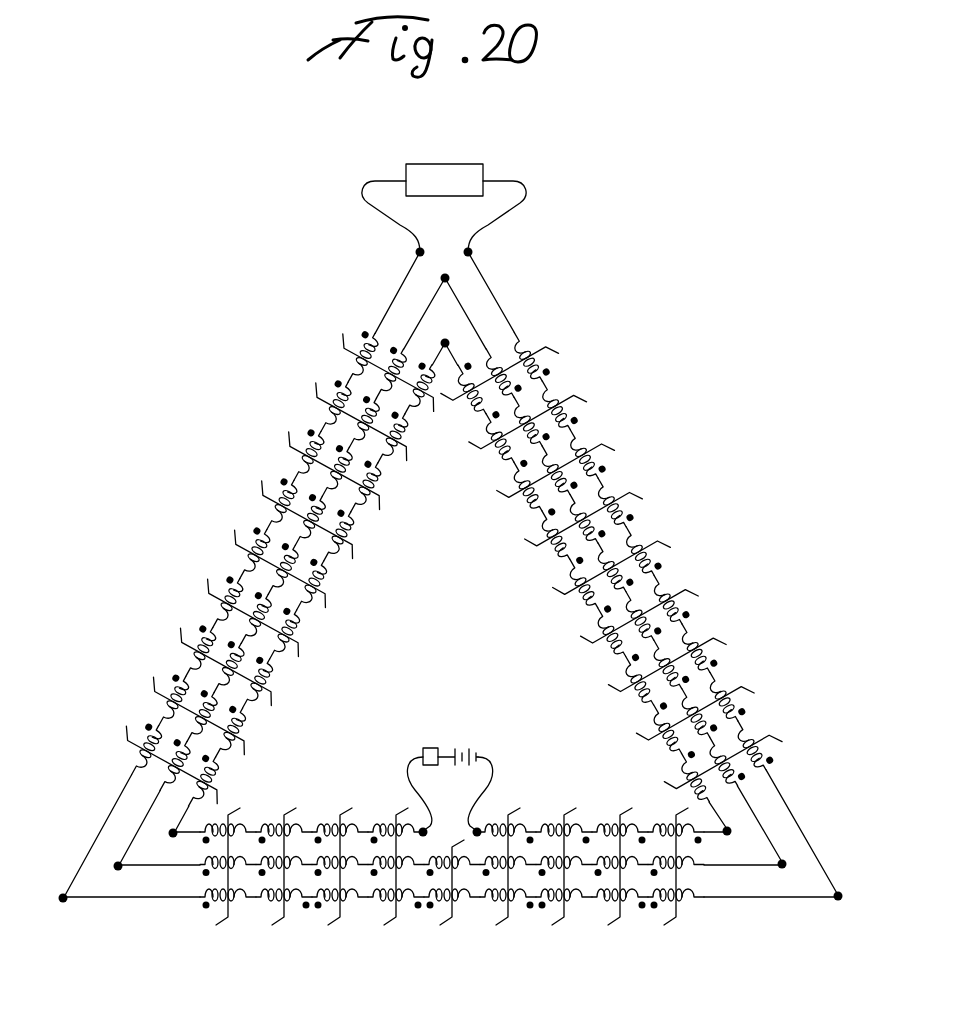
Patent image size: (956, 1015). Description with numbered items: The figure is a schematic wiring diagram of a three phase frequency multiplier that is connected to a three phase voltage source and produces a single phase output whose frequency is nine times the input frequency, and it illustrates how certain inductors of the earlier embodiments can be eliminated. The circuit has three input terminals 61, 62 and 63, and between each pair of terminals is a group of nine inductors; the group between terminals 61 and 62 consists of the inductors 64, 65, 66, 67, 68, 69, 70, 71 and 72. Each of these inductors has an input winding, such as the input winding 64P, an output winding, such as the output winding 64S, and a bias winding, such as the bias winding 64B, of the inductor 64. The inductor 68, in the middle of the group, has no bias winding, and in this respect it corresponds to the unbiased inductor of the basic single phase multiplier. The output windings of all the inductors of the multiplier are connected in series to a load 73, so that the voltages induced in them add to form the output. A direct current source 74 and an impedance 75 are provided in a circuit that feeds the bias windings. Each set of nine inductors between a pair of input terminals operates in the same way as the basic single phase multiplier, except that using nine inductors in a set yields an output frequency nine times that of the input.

The input terminal 61 is at (118, 858).
The input terminal 62 is at (777, 868).
The input terminal 63 is at (460, 258).
The inductor 64 is at (196, 884).
The bias winding 64B is at (207, 844).
The input winding 64P is at (201, 882).
The output winding 64S is at (216, 925).
The inductor 65 is at (275, 936).
The inductor 66 is at (331, 936).
The inductor 67 is at (387, 936).
The inductor 68 is at (443, 936).
The inductor 69 is at (499, 936).
The inductor 70 is at (555, 936).
The inductor 71 is at (611, 936).
The inductor 72 is at (705, 856).
The load 73 is at (458, 194).
The direct current source 74 is at (478, 748).
The impedance 75 is at (428, 748).